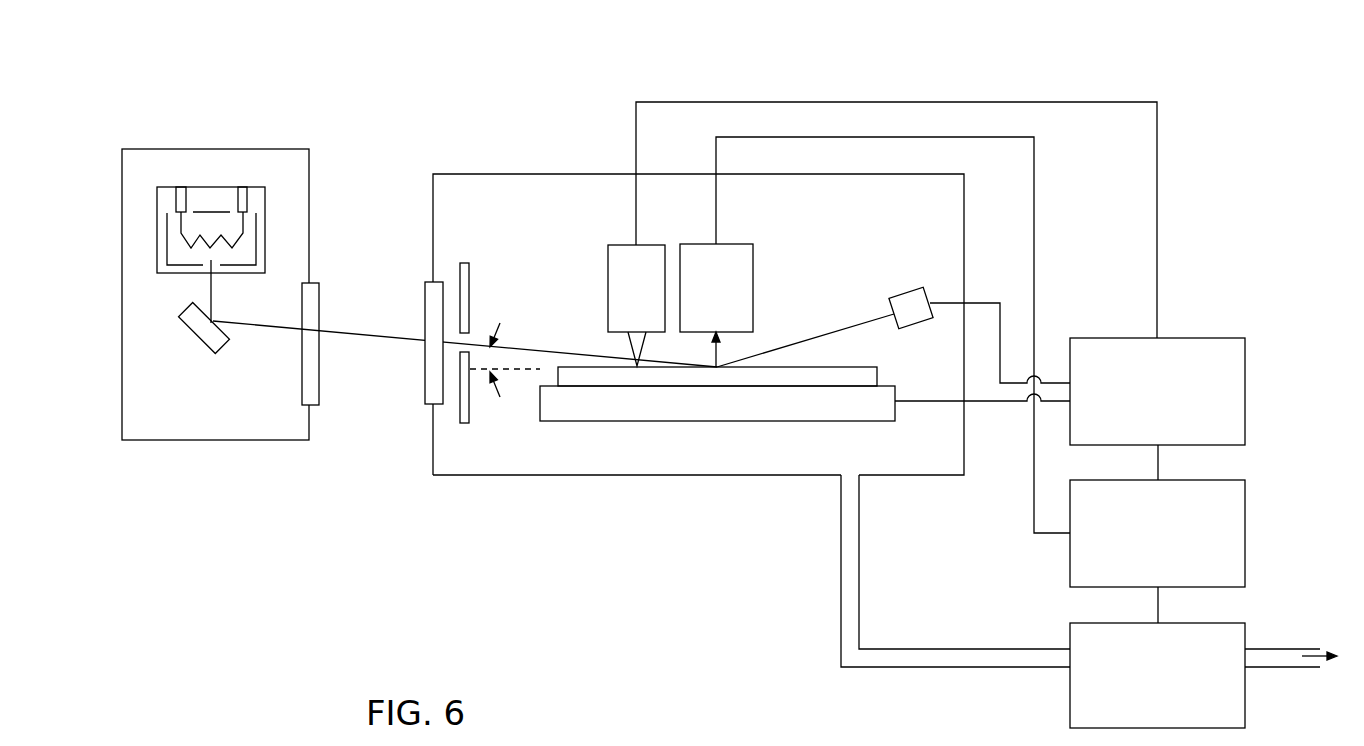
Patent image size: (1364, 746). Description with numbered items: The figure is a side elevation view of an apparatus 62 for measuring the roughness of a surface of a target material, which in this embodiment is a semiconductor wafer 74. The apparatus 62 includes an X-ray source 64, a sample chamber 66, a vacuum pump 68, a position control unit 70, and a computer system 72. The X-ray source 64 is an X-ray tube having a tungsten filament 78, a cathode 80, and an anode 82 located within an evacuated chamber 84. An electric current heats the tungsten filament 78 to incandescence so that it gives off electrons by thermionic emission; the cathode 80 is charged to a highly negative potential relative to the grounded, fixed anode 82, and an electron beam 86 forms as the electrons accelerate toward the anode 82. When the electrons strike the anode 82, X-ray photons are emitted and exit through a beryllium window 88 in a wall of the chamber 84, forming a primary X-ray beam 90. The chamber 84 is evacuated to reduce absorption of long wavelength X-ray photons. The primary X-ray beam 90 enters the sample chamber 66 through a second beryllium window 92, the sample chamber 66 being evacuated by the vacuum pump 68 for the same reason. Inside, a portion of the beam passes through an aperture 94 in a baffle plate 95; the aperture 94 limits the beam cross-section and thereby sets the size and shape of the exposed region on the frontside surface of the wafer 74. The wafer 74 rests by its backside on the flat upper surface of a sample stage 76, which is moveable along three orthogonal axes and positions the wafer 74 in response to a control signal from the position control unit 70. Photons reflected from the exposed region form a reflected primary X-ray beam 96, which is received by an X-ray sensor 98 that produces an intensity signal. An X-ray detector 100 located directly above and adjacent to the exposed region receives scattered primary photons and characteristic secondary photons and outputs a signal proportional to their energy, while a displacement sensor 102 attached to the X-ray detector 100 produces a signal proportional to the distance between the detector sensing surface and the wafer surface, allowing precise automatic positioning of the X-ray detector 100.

The apparatus 62 is at (968, 62).
The X-ray source 64 is at (145, 119).
The sample chamber 66 is at (925, 463).
The vacuum pump 68 is at (1145, 701).
The position control unit 70 is at (1145, 431).
The computer system 72 is at (1145, 573).
The semiconductor wafer 74 is at (879, 378).
The sample stage 76 is at (715, 423).
The tungsten filament 78 is at (202, 235).
The cathode 80 is at (157, 230).
The anode 82 is at (193, 335).
The evacuated chamber 84 is at (297, 433).
The electron beam 86 is at (211, 290).
The beryllium window 88 is at (322, 298).
The primary X-ray beam 90 is at (345, 333).
The beryllium window 92 is at (432, 282).
The aperture 94 is at (454, 328).
The baffle plate 95 is at (465, 423).
The reflected primary X-ray beam 96 is at (836, 330).
The X-ray sensor 98 is at (907, 288).
The X-ray detector 100 is at (696, 299).
The displacement sensor 102 is at (616, 299).